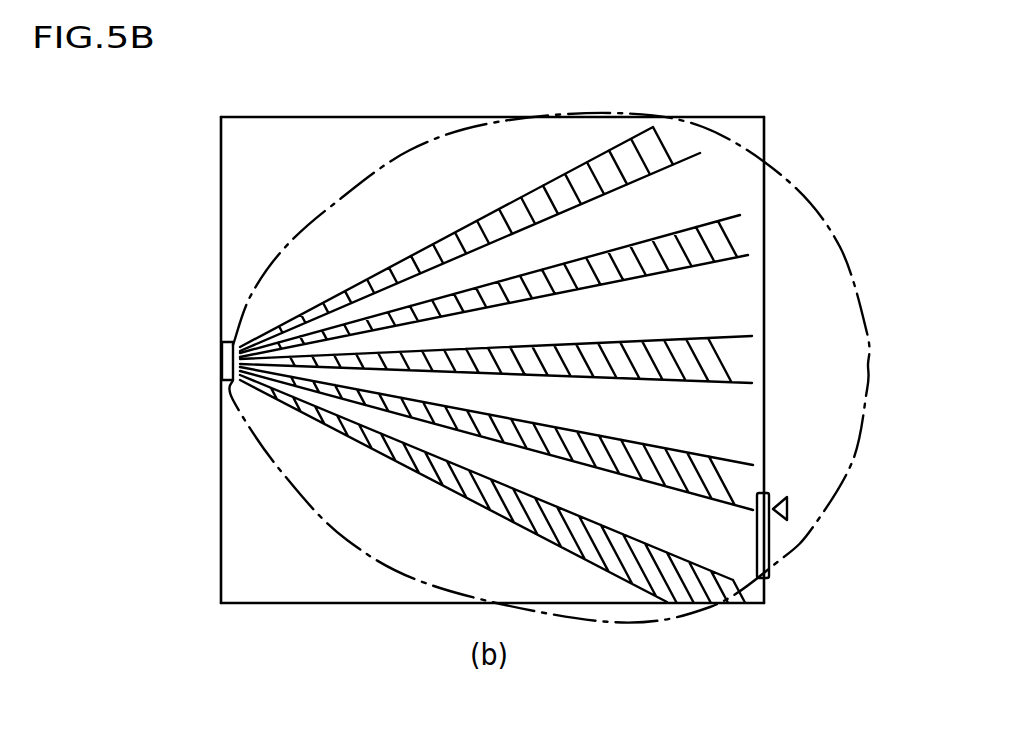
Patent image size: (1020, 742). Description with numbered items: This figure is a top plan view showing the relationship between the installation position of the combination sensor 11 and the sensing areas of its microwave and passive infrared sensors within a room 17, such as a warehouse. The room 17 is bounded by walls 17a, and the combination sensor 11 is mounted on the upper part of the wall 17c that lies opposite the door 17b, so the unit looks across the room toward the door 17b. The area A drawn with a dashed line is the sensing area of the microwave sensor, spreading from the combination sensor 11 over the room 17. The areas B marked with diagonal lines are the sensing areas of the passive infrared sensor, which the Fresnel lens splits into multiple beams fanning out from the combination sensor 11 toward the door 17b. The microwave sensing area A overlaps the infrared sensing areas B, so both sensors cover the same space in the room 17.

The room 17 is at (732, 170).
The walls 17a is at (763, 300).
The door 17b is at (770, 535).
The wall 17c is at (222, 237).
The combination sensor 11 is at (226, 341).
The sensing area A is at (787, 172).
The sensing areas B is at (508, 205).